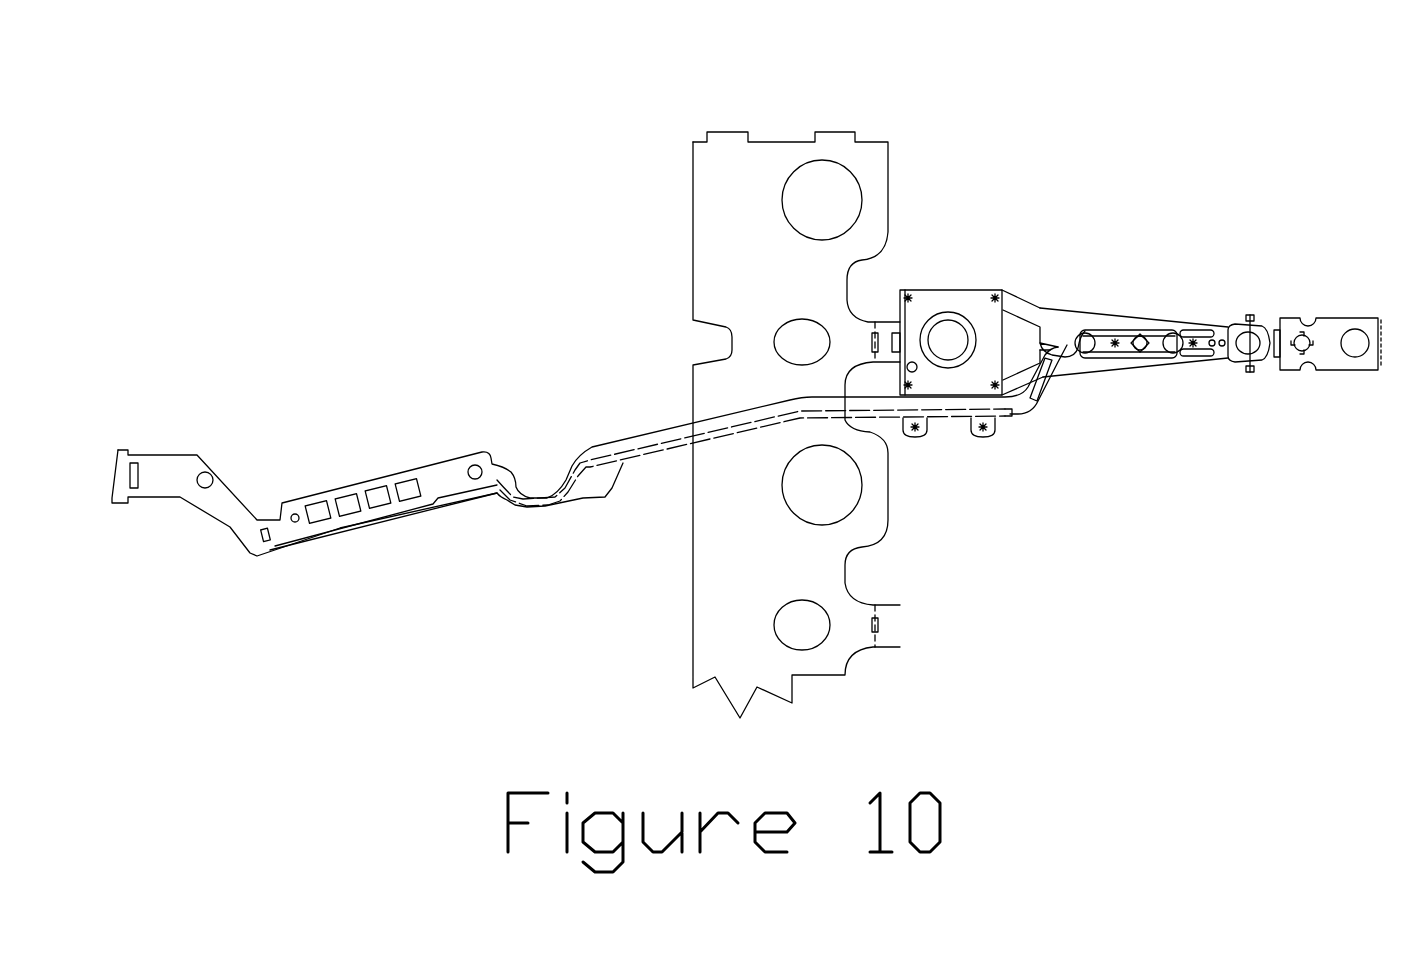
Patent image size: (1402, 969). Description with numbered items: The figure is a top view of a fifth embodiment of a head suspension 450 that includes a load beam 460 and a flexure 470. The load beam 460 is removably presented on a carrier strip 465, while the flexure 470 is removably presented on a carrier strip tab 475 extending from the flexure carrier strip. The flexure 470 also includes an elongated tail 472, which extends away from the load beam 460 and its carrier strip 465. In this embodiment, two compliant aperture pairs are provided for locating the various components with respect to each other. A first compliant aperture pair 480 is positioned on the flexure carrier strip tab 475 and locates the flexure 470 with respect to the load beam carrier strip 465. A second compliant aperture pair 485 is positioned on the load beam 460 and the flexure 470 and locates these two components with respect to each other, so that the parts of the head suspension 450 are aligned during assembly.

The head suspension 450 is at (1187, 115).
The carrier strip 465 is at (888, 172).
The load beam 460 is at (1063, 310).
The flexure 470 is at (1078, 313).
The elongated tail 472 is at (558, 497).
The carrier strip tab 475 is at (1363, 318).
The first compliant aperture pair 480 is at (1290, 372).
The second compliant aperture pair 485 is at (1140, 343).